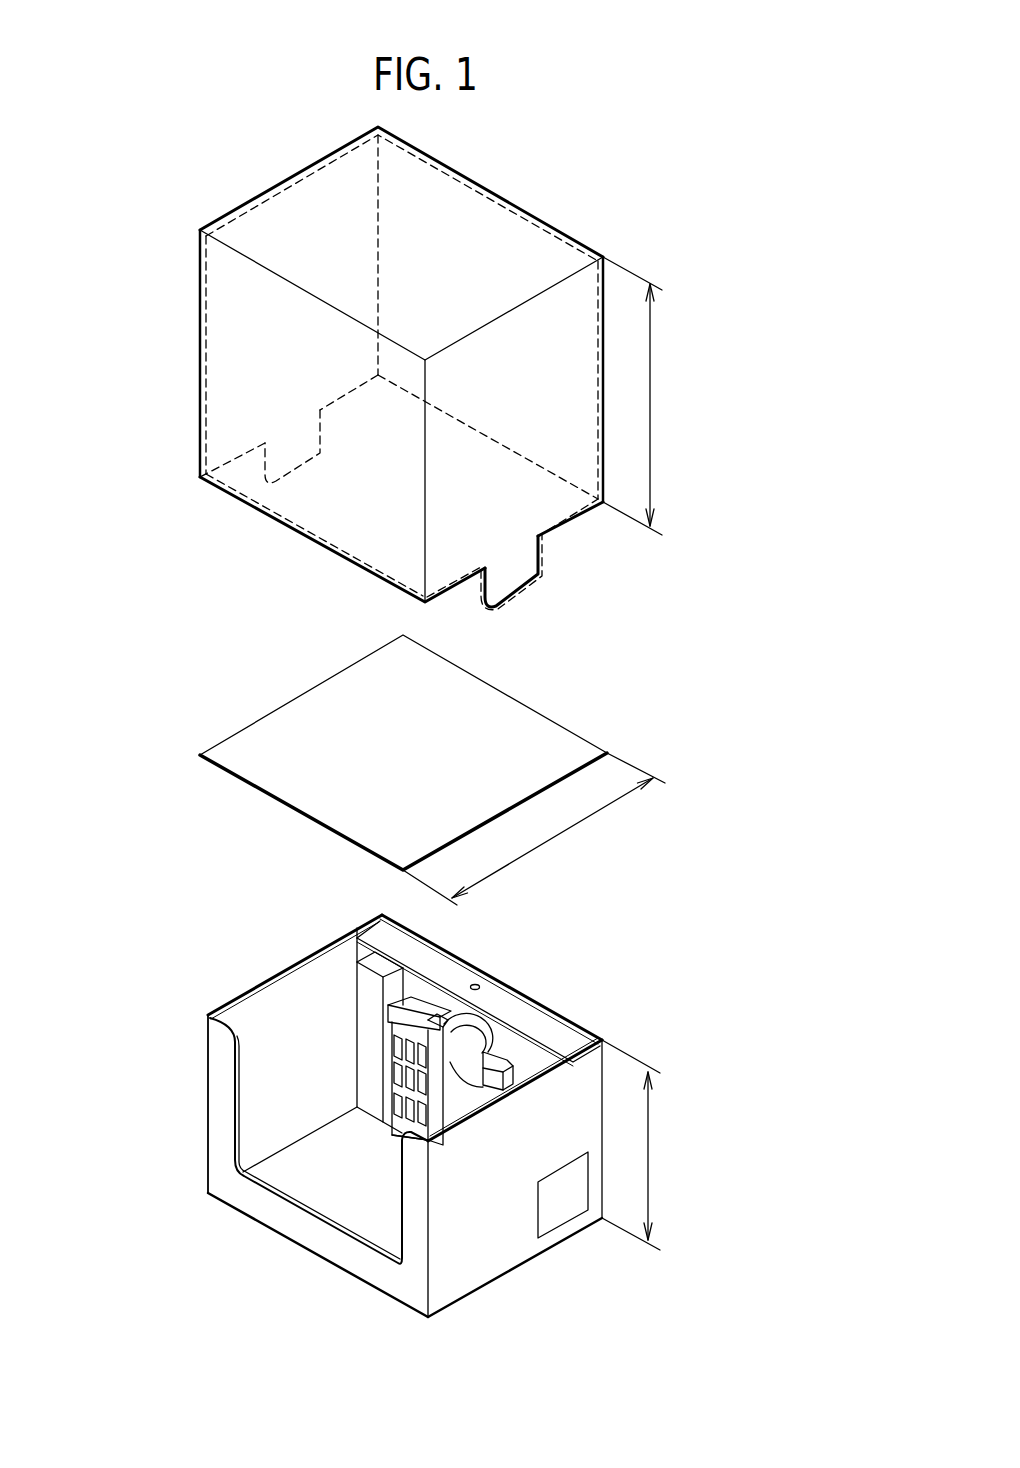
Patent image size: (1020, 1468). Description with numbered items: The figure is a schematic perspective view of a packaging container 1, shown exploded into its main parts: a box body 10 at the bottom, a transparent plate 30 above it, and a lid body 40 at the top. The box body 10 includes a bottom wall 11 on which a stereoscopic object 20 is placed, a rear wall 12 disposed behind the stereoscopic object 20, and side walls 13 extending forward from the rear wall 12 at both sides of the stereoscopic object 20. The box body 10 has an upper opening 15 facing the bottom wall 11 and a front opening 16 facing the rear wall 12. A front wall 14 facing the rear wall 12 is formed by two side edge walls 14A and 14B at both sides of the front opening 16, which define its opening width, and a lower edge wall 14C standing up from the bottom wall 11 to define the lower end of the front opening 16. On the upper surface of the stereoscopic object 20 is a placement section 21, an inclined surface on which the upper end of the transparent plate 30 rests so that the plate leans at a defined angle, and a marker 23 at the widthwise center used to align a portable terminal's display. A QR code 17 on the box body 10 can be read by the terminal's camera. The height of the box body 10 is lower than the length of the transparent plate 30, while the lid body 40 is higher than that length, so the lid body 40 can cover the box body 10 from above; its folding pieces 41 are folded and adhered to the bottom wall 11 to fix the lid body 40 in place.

The packaging container 1 is at (693, 683).
The box body 10 is at (406, 1109).
The bottom wall 11 is at (353, 1213).
The rear wall 12 is at (602, 1077).
The side walls 13 is at (420, 1120).
The front wall 14 is at (256, 1168).
The side edge wall 14A is at (223, 1043).
The side edge wall 14B is at (412, 1215).
The lower edge wall 14C is at (255, 1202).
The upper opening 15 is at (298, 1005).
The front opening 16 is at (263, 1110).
The QR code 17 is at (560, 1207).
The stereoscopic object 20 is at (435, 1043).
The placement section 21 is at (478, 988).
The marker 23 is at (475, 984).
The transparent plate 30 is at (553, 738).
The lid body 40 is at (410, 376).
The folding pieces 41 is at (513, 580).